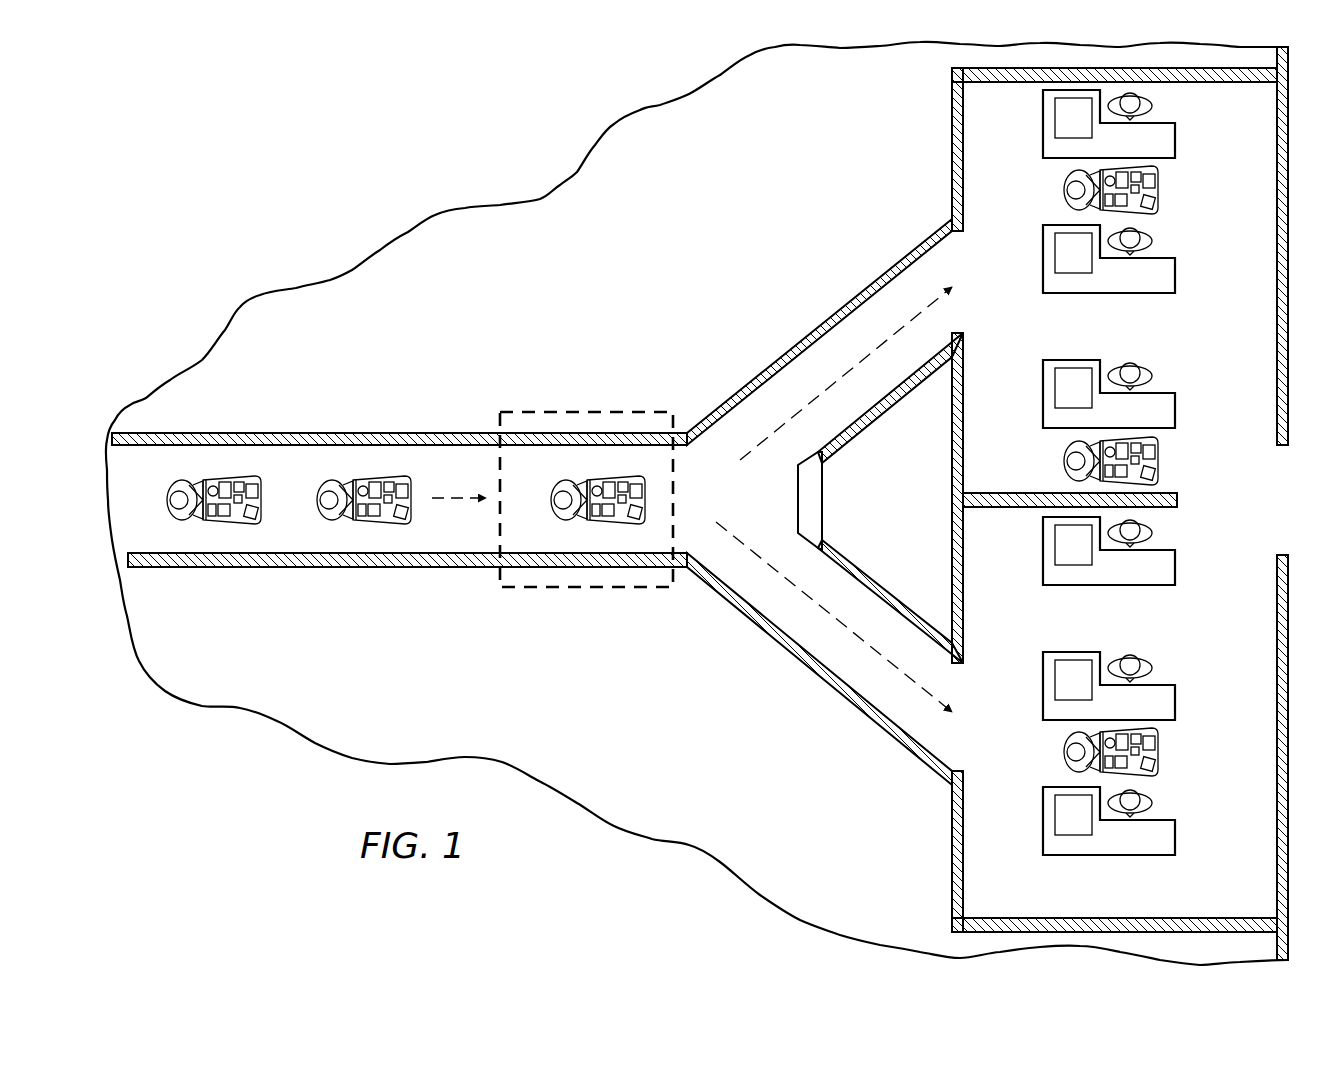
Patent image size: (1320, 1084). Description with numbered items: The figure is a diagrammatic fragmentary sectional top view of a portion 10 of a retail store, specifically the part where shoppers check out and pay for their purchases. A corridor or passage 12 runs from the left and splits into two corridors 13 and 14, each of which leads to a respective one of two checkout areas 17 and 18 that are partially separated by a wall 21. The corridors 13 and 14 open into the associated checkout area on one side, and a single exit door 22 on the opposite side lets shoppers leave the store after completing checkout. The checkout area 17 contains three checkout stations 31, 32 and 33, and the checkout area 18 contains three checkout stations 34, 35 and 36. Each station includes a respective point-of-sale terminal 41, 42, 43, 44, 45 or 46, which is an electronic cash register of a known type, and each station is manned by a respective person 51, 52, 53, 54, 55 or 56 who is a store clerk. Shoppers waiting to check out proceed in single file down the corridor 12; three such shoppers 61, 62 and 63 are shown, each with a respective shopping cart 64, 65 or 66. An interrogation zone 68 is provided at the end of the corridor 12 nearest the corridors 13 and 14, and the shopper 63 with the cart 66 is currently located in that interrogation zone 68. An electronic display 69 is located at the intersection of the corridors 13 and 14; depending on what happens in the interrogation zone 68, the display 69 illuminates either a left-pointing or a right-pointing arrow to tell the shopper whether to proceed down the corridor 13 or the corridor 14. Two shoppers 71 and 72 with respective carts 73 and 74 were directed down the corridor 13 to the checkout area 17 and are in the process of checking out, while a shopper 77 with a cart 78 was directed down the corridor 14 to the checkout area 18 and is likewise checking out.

The portion of a retail store 10 is at (399, 195).
The corridor 12 is at (246, 436).
The corridor 13 is at (792, 366).
The corridor 14 is at (792, 636).
The checkout area 17 is at (1016, 180).
The checkout area 18 is at (1016, 851).
The wall 21 is at (1000, 493).
The exit door 22 is at (1283, 553).
The checkout station 31 is at (1177, 142).
The checkout station 32 is at (1177, 277).
The checkout station 33 is at (1177, 413).
The checkout station 34 is at (1177, 575).
The checkout station 35 is at (1177, 710).
The checkout station 36 is at (1177, 845).
The point-of-sale terminal 41 is at (1055, 118).
The point-of-sale terminal 42 is at (1055, 255).
The point-of-sale terminal 43 is at (1055, 391).
The point-of-sale terminal 44 is at (1055, 546).
The point-of-sale terminal 45 is at (1055, 682).
The point-of-sale terminal 46 is at (1055, 817).
The person 51 is at (1155, 104).
The person 52 is at (1155, 240).
The person 53 is at (1155, 376).
The person 54 is at (1155, 533).
The person 55 is at (1155, 668).
The person 56 is at (1155, 805).
The shopper 61 is at (166, 482).
The shopper 62 is at (316, 480).
The shopper 63 is at (557, 476).
The shopping cart 64 is at (262, 514).
The shopping cart 65 is at (414, 514).
The shopping cart 66 is at (612, 524).
The interrogation zone 68 is at (557, 594).
The electronic display 69 is at (797, 497).
The shopper 71 is at (1062, 190).
The shopper 72 is at (1062, 458).
The cart 73 is at (1162, 196).
The cart 74 is at (1162, 468).
The shopper 77 is at (1062, 752).
The cart 78 is at (1162, 758).